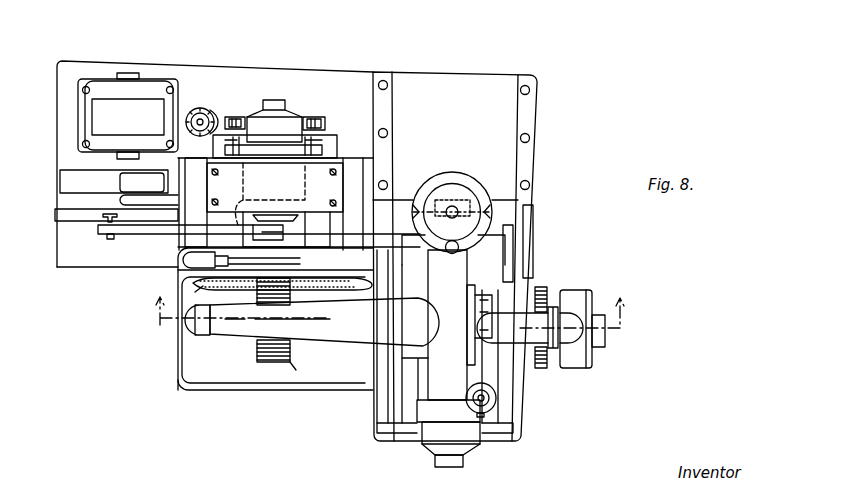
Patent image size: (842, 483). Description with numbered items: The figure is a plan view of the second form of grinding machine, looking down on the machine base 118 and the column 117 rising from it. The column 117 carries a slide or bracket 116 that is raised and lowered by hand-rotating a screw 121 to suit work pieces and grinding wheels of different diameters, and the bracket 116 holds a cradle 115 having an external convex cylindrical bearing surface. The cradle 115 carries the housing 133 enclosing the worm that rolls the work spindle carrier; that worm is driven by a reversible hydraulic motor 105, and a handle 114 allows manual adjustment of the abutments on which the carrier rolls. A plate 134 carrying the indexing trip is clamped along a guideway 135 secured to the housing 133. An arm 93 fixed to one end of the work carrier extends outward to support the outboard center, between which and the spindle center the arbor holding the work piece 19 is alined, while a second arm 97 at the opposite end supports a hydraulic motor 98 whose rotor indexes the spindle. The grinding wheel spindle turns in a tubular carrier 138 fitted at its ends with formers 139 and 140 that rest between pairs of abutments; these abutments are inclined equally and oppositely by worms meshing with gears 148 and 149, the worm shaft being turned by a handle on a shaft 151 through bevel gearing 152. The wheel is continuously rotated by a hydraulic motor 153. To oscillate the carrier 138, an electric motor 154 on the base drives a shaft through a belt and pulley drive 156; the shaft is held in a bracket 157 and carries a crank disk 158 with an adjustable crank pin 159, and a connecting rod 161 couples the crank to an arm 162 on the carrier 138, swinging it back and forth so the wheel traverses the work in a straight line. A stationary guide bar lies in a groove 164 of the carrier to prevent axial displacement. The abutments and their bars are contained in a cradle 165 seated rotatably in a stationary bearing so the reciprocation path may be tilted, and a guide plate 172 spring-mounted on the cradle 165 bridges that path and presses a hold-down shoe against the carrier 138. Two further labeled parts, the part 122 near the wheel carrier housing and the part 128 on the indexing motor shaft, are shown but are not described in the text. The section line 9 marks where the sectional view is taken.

The section line 9- 9 is at (386, 317).
The work piece 19 is at (282, 328).
The arm 93 is at (348, 338).
The second arm 97 is at (532, 295).
The hydraulic motor 98 is at (598, 346).
The reversible hydraulic motor 105 is at (472, 440).
The handle 114 is at (490, 410).
The cradle 115 is at (508, 255).
The slide or bracket 116 is at (505, 212).
The column 117 is at (498, 118).
The machine base 118 is at (191, 65).
The screw 121 is at (455, 207).
The gear housing 122 is at (220, 310).
The shaft 128 is at (548, 366).
The housing 133 is at (435, 363).
The plate 134 is at (485, 296).
The guideway 135 is at (467, 304).
The tubular carrier 138 is at (305, 222).
The former 139 is at (291, 229).
The former 140 is at (322, 150).
The gear 148 is at (318, 117).
The gear 149 is at (240, 116).
The shaft 151 is at (198, 106).
The bevel gearing 152 is at (214, 108).
The motor 153 is at (284, 120).
The motor 154 is at (108, 100).
The belt and pulley drive 156 is at (97, 178).
The bracket 157 is at (143, 228).
The crank disk 158 is at (76, 222).
The crank pin 159 is at (110, 240).
The connecting rod 161 is at (182, 245).
The arm 162 is at (275, 222).
The groove 164 is at (275, 187).
The cradle 165 is at (188, 179).
The guide plate 172 is at (208, 190).